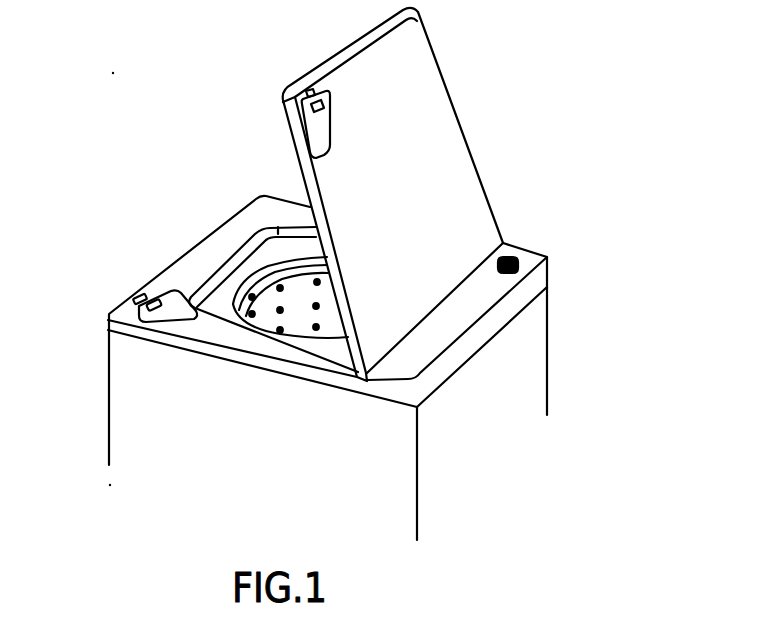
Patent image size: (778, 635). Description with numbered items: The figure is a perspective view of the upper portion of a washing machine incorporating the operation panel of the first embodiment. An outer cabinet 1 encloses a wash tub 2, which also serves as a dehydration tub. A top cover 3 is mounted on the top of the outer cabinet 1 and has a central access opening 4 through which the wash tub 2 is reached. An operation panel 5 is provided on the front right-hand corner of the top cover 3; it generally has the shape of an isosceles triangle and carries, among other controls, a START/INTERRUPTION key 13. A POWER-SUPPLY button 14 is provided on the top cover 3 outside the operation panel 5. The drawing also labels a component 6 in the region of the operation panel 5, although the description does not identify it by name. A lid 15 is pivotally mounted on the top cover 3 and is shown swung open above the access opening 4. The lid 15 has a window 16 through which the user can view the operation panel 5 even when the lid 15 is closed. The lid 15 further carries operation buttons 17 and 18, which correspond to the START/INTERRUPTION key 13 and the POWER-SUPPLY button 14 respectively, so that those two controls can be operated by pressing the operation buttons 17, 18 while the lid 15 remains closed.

The outer cabinet 1 is at (108, 413).
The wash tub 2 is at (267, 296).
The top cover 3 is at (201, 237).
The central access opening 4 is at (310, 339).
The operation panel 5 is at (170, 289).
The operation panel 6 is at (176, 316).
The START/INTERRUPTION key 13 is at (149, 299).
The POWER-SUPPLY button 14 is at (133, 299).
The lid 15 is at (443, 99).
The window 16 is at (325, 128).
The operation button 17 is at (318, 100).
The operation button 18 is at (308, 88).